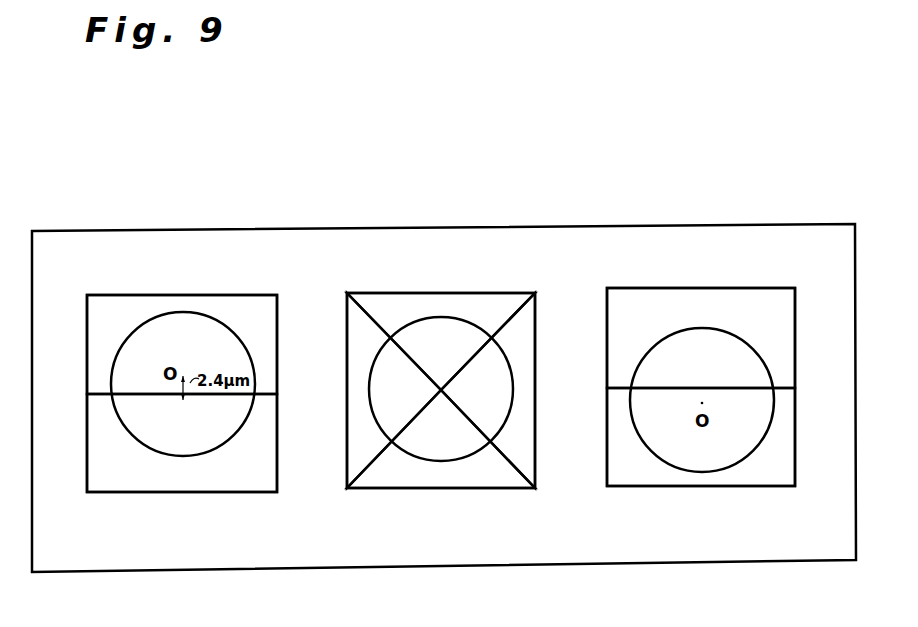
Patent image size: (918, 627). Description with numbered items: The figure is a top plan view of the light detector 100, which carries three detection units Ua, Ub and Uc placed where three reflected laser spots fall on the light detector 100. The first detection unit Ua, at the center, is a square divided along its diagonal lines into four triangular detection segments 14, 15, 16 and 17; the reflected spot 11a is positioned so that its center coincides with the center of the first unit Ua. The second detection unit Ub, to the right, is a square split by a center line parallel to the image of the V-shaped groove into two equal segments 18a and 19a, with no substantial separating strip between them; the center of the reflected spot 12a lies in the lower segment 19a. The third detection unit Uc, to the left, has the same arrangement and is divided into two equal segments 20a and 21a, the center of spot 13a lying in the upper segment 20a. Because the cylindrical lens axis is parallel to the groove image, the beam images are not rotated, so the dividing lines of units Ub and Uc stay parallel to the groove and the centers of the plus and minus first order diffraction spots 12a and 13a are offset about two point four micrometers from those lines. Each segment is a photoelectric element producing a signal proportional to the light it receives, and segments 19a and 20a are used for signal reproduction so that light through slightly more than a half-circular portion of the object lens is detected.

The light detector 100 is at (563, 227).
The first detection unit Ua is at (412, 280).
The second detection unit Ub is at (686, 282).
The third detection unit Uc is at (163, 280).
The upper segment of third detection unit 20a is at (228, 304).
The lower segment of third detection unit 21a is at (130, 485).
The reflected light spot 13a is at (213, 450).
The triangle detection segment 16 is at (466, 302).
The triangle detection segment 15 is at (353, 355).
The triangle detection segment 14 is at (525, 388).
The triangle detection segment 17 is at (418, 480).
The reflected light spot 11a is at (468, 457).
The upper segment of second detection unit 18a is at (732, 300).
The lower segment of second detection unit 19a is at (648, 468).
The reflected light spot 12a is at (743, 459).